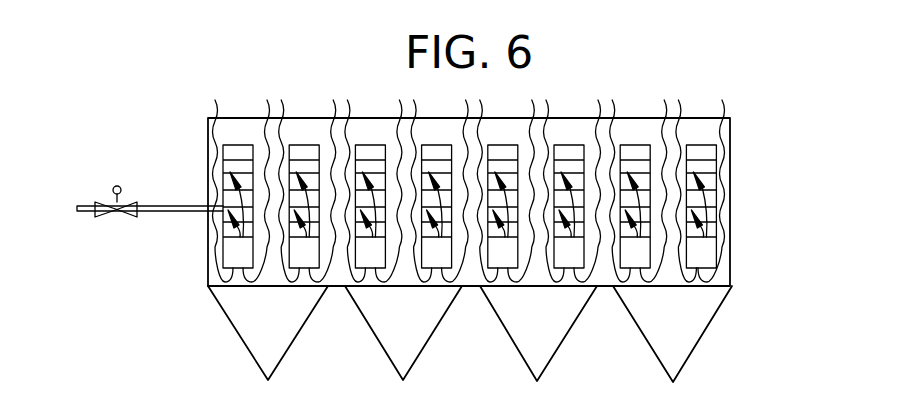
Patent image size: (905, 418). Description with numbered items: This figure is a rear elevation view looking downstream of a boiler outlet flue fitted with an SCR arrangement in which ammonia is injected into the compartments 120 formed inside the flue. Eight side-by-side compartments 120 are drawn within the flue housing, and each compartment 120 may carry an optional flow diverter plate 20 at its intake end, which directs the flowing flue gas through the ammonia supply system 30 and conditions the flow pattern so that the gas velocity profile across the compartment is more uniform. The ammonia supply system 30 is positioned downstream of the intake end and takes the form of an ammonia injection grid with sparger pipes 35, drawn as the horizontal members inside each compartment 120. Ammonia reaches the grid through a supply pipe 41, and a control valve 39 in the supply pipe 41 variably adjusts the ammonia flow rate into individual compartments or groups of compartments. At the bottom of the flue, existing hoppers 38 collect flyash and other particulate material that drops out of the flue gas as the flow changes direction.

The compartment 120 is at (242, 153).
The flow diverter plate 20 is at (232, 255).
The ammonia supply system 30 is at (640, 153).
The sparger pipes 35 is at (707, 207).
The hoppers 38 is at (683, 330).
The control valve 39 is at (108, 202).
The supply pipe 41 is at (89, 213).